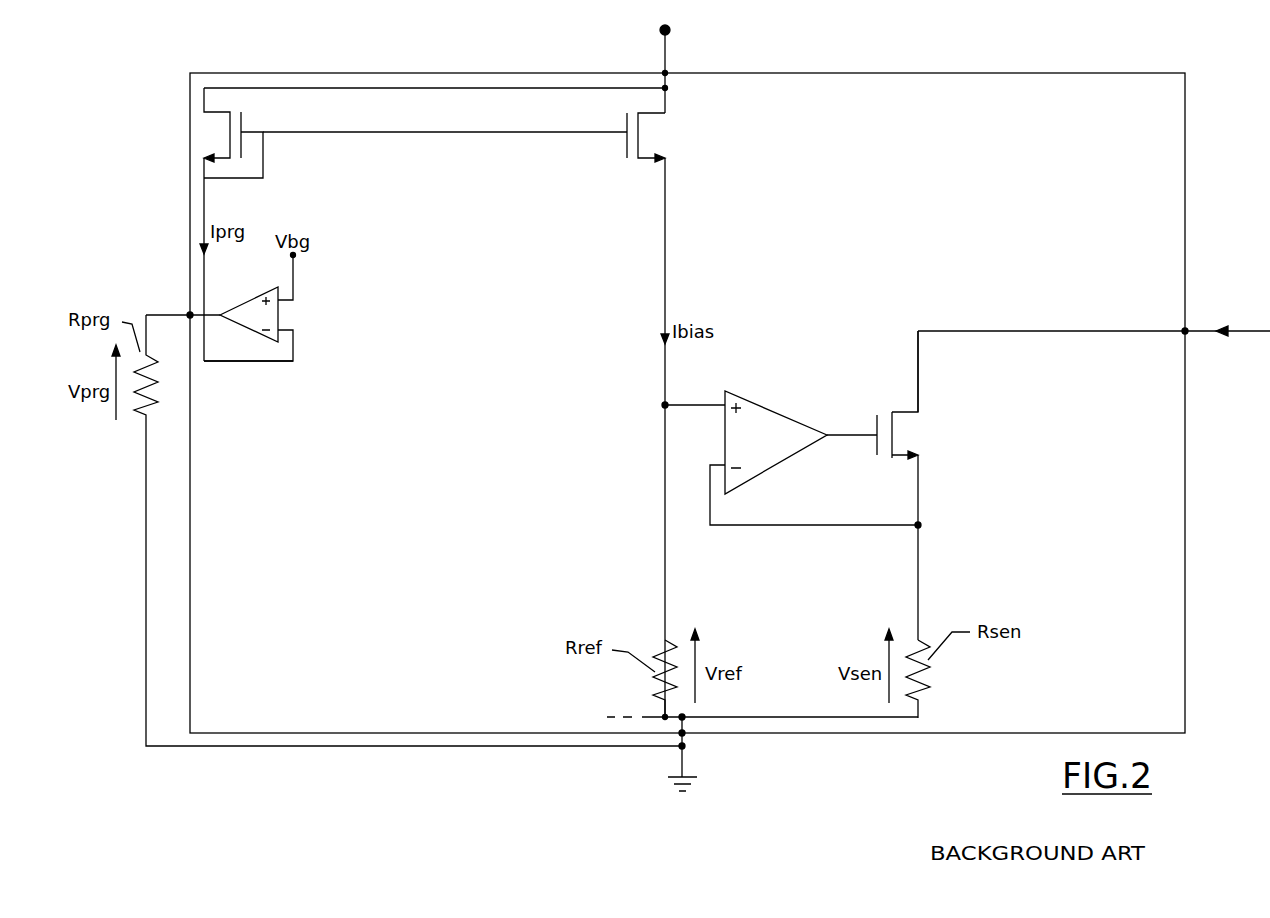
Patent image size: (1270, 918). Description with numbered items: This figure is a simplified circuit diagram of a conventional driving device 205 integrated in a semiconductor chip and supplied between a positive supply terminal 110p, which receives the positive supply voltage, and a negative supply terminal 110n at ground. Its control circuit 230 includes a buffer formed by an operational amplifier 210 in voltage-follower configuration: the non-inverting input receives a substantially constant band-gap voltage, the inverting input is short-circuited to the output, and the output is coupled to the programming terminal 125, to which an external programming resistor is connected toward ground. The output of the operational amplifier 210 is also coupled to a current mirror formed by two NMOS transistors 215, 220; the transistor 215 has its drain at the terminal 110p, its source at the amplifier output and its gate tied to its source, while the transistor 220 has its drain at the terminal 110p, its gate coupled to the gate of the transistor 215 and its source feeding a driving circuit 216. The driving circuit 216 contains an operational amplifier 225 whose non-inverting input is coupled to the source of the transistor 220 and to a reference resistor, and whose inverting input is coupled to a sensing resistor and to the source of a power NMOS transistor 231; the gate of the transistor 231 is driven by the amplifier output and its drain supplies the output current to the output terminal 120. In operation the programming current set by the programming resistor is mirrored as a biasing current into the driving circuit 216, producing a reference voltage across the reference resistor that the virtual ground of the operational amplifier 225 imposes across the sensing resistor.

The driving device 205 is at (188, 198).
The positive supply terminal 110p is at (664, 72).
The negative supply terminal 110n is at (690, 737).
The output terminal 120 is at (1188, 328).
The programming terminal 125 is at (189, 313).
The operational amplifier 210 is at (252, 333).
The NMOS transistor 215 is at (244, 124).
The driving circuit 216 is at (936, 220).
The NMOS transistor 220 is at (625, 120).
The operational amplifier 225 is at (752, 395).
The control circuit 230 is at (326, 450).
The power NMOS transistor 231 is at (912, 456).